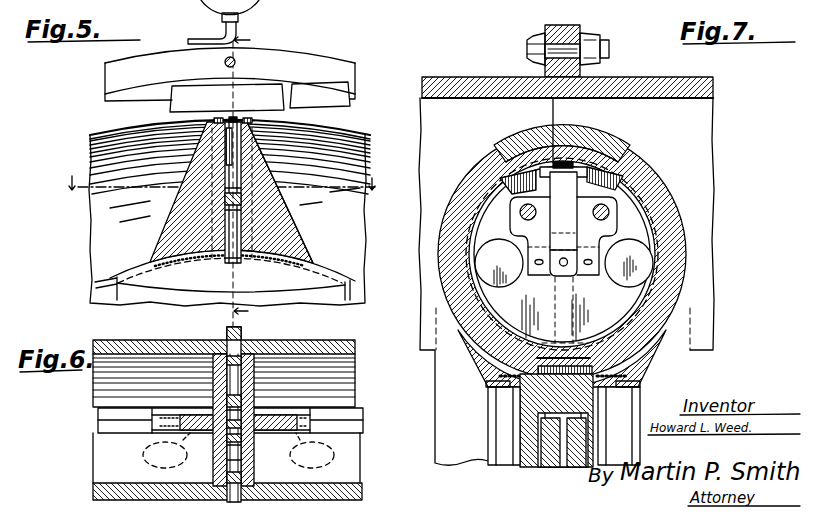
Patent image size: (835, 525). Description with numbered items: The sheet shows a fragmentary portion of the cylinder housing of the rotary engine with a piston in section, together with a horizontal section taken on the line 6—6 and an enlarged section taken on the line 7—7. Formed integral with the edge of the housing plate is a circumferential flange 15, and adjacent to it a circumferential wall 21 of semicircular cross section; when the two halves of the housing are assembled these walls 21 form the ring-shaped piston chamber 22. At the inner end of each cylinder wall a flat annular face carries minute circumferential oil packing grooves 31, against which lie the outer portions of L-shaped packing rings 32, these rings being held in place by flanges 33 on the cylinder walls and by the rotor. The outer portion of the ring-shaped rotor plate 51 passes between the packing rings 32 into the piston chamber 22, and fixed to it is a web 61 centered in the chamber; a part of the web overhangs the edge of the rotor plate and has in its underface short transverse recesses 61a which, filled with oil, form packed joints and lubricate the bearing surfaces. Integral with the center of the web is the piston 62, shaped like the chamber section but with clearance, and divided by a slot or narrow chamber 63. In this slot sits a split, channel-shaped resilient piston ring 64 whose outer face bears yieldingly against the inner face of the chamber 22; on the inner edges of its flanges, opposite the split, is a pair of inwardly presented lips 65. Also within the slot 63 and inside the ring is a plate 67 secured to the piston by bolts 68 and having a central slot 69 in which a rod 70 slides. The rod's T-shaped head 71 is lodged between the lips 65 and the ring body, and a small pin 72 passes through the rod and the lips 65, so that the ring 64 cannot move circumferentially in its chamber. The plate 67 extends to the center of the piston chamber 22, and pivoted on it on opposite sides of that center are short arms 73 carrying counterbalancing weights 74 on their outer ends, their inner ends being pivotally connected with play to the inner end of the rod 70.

In FIG. 5, the section line 6— 6 is at (221, 188).
In FIG. 5, the section line 7— 7 is at (237, 177).
In FIG. 6, the section line 7— 7 is at (238, 318).
In FIG. 7, the circumferential flange 15 is at (612, 88).
In FIG. 5, the circumferential wall 21 is at (345, 153).
In FIG. 6, the circumferential wall 21 is at (333, 490).
In FIG. 7, the circumferential wall 21 is at (490, 158).
In FIG. 5, the ring-shaped piston chamber 22 is at (330, 230).
In FIG. 6, the ring-shaped piston chamber 22 is at (340, 386).
In FIG. 7, the oil packing grooves 31 is at (508, 392).
In FIG. 7, the packing ring 32 is at (523, 433).
In FIG. 7, the flange 33 is at (488, 385).
In FIG. 5, the rotor plate 51 is at (305, 292).
In FIG. 6, the rotor plate 51 is at (340, 428).
In FIG. 7, the rotor plate 51 is at (580, 467).
In FIG. 6, the web 61 is at (272, 415).
In FIG. 5, the transverse recesses 61a is at (296, 262).
In FIG. 6, the transverse recesses 61a is at (238, 451).
In FIG. 6, the piston 62 is at (207, 398).
In FIG. 5, the slot or narrow chamber 63 is at (232, 256).
In FIG. 6, the slot or narrow chamber 63 is at (250, 342).
In FIG. 7, the piston ring 64 is at (648, 204).
In FIG. 5, the inwardly presented lips 65 is at (219, 120).
In FIG. 7, the inwardly presented lips 65 is at (592, 157).
In FIG. 5, the plate 67 is at (205, 170).
In FIG. 7, the plate 67 is at (538, 156).
In FIG. 5, the bolts 68 is at (292, 124).
In FIG. 7, the bolts 68 is at (522, 212).
In FIG. 7, the slot 69 is at (537, 233).
In FIG. 5, the rod 70 is at (262, 168).
In FIG. 7, the rod 70 is at (565, 193).
In FIG. 5, the T-shaped head 71 is at (235, 118).
In FIG. 7, the T-shaped head 71 is at (558, 160).
In FIG. 7, the pin 72 is at (567, 167).
In FIG. 6, the arms 73 is at (243, 400).
In FIG. 7, the arms 73 is at (522, 280).
In FIG. 6, the counterbalancing weights 74 is at (215, 342).
In FIG. 7, the counterbalancing weights 74 is at (630, 260).